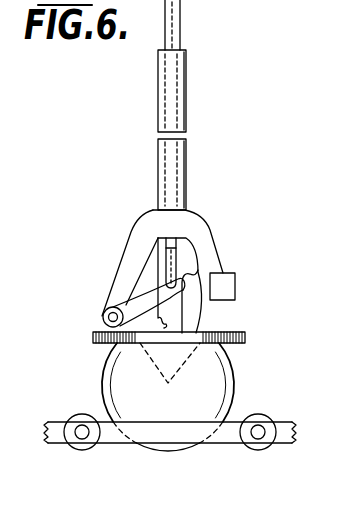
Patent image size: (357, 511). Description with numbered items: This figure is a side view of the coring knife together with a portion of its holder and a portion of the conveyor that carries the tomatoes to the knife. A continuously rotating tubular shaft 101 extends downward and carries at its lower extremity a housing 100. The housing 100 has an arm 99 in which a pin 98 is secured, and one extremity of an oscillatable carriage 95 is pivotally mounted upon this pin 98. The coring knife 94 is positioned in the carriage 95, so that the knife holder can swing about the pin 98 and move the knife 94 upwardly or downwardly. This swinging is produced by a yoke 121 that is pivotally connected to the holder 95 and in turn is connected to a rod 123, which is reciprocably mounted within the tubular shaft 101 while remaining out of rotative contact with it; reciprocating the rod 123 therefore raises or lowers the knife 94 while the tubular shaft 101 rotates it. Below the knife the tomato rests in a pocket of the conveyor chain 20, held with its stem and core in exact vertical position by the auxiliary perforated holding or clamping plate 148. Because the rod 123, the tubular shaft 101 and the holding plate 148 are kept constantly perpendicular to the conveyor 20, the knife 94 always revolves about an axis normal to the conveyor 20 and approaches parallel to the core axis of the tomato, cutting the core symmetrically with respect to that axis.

The rod 123 is at (181, 23).
The tubular shaft 101 is at (186, 165).
The housing 100 is at (226, 235).
The arm 99 is at (132, 253).
The yoke 121 is at (141, 296).
The oscillatable carriage 95 is at (141, 297).
The pin 98 is at (103, 315).
The coring knife 94 is at (203, 318).
The auxiliary perforated holding plate 148 is at (246, 338).
The conveyor chain 20 is at (283, 423).